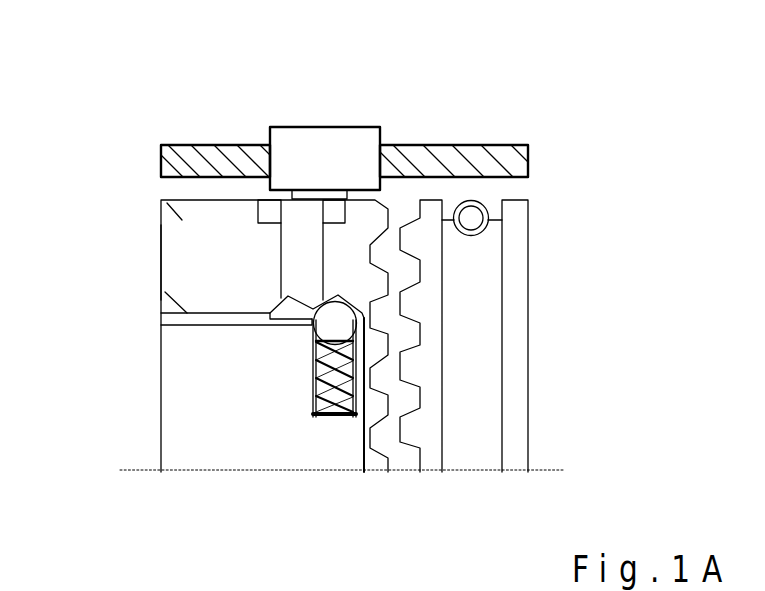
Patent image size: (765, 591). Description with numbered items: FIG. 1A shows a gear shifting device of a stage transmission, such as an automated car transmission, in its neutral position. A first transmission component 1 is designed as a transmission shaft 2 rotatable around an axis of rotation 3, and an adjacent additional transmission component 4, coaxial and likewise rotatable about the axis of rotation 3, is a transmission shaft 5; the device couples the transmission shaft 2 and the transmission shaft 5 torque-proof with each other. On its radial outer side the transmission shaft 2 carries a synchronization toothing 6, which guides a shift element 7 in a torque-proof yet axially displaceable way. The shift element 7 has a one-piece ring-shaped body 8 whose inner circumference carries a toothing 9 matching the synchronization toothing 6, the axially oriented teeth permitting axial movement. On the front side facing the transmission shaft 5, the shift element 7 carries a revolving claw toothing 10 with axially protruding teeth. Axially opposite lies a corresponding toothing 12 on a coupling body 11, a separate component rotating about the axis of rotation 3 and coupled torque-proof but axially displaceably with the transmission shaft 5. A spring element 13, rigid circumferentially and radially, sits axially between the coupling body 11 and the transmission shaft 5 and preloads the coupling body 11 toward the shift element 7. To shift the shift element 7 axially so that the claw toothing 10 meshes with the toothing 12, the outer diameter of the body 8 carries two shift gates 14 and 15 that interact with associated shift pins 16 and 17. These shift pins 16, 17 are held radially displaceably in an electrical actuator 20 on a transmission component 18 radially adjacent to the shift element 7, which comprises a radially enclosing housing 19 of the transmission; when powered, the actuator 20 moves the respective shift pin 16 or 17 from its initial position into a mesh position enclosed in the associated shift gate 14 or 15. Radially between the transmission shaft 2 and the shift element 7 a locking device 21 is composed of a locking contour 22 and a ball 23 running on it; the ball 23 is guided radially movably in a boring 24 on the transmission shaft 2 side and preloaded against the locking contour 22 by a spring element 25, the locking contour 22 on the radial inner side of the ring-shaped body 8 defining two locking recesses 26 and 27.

The first transmission component 1 is at (170, 502).
The transmission shaft 2 is at (203, 437).
The axis of rotation 3 is at (142, 466).
The additional transmission component 4 is at (547, 280).
The transmission shaft 5 is at (513, 380).
The synchronization toothing 6 is at (165, 326).
The shift element 7 is at (138, 228).
The ring-shaped body 8 is at (155, 198).
The toothing 9 is at (160, 291).
The claw toothing 10 is at (378, 228).
The coupling body 11 is at (425, 392).
The toothing 12 is at (440, 395).
The spring element 13 is at (482, 212).
The shift gate 14 is at (279, 218).
The shift gate 15 is at (374, 199).
The shift pin 16 is at (288, 467).
The shift pin 17 is at (372, 125).
The transmission component 18 is at (162, 122).
The housing 19 is at (490, 172).
The actuator 20 is at (340, 294).
The locking device 21 is at (329, 452).
The locking contour 22 is at (288, 306).
The ball 23 is at (313, 327).
The boring 24 is at (372, 354).
The spring element 25 is at (337, 418).
The locking recess 26 is at (292, 272).
The locking recess 27 is at (345, 298).